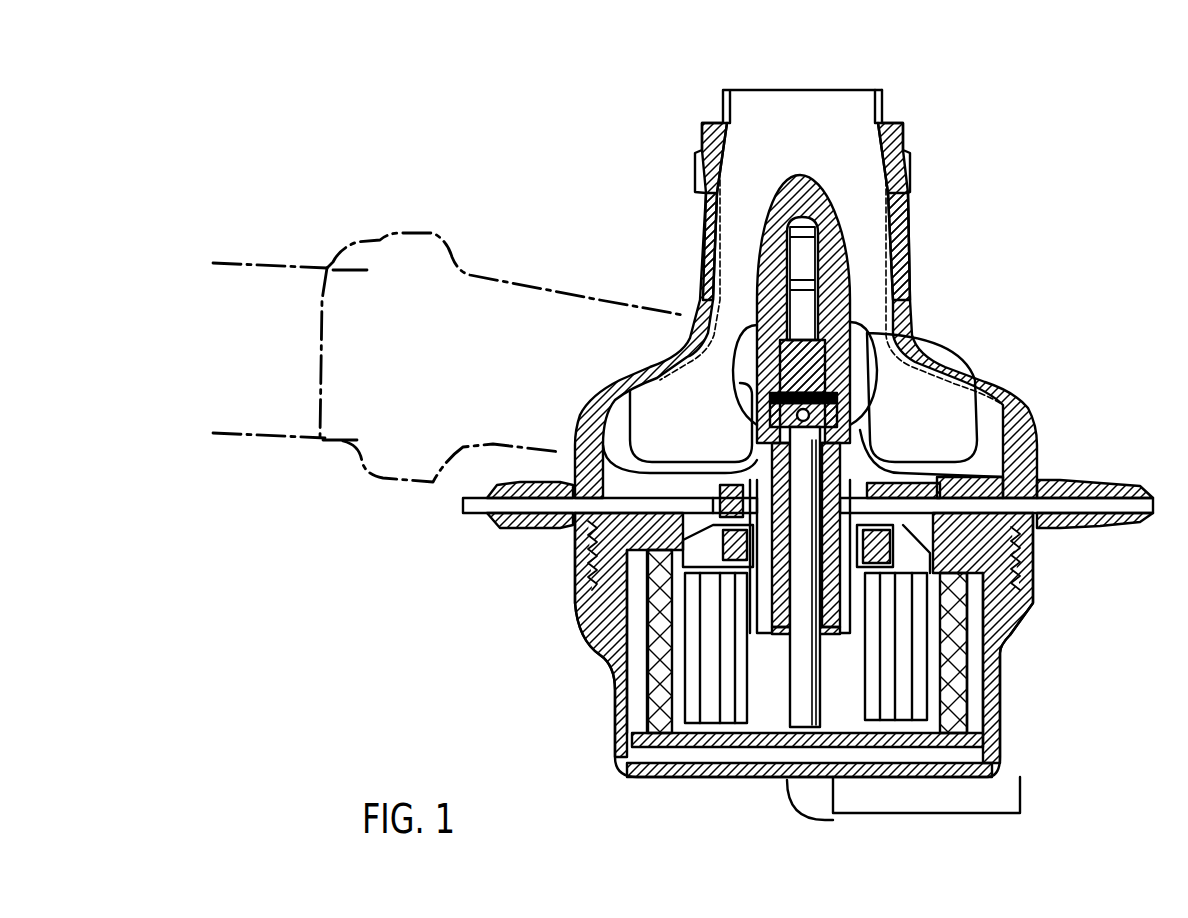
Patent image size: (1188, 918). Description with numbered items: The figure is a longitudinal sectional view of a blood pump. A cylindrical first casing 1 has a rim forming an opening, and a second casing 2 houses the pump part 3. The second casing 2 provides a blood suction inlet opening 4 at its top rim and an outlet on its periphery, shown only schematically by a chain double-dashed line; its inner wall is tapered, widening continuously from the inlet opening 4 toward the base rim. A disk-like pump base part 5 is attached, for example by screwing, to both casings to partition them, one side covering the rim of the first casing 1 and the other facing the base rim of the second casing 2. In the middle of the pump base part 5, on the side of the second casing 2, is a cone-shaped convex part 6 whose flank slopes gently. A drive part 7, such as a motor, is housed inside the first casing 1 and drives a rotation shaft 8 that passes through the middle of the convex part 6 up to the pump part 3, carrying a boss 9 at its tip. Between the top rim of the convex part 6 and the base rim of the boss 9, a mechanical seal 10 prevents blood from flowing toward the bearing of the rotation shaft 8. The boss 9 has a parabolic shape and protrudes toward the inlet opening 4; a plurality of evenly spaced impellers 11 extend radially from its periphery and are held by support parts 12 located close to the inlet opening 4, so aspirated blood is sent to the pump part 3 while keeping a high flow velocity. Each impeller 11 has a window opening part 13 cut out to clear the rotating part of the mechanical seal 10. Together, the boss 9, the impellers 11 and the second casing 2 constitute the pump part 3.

The first casing 1 is at (598, 652).
The second casing 2 is at (583, 384).
The pump part 3 is at (1058, 267).
The inlet opening 4 is at (834, 91).
The pump base part 5 is at (577, 433).
The convex part 6 is at (743, 448).
The drive part 7 is at (1061, 540).
The rotation shaft 8 is at (798, 678).
The boss 9 is at (817, 198).
The mechanical seal 10 is at (903, 335).
The impellers 11 is at (903, 393).
The support parts 12 is at (863, 290).
The window opening part 13 is at (740, 330).